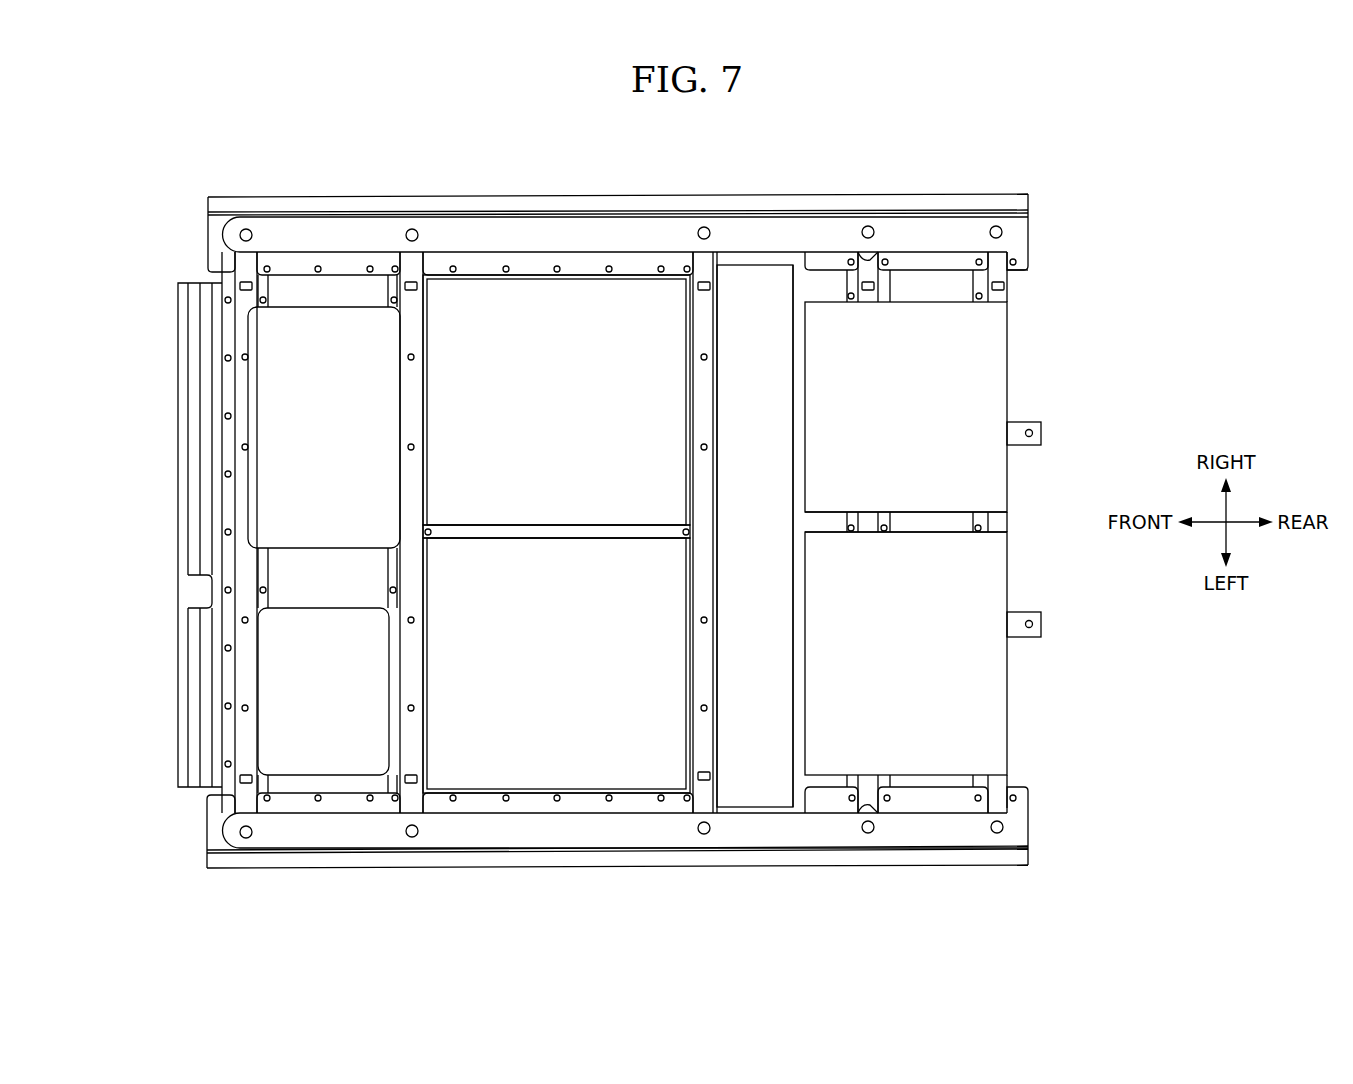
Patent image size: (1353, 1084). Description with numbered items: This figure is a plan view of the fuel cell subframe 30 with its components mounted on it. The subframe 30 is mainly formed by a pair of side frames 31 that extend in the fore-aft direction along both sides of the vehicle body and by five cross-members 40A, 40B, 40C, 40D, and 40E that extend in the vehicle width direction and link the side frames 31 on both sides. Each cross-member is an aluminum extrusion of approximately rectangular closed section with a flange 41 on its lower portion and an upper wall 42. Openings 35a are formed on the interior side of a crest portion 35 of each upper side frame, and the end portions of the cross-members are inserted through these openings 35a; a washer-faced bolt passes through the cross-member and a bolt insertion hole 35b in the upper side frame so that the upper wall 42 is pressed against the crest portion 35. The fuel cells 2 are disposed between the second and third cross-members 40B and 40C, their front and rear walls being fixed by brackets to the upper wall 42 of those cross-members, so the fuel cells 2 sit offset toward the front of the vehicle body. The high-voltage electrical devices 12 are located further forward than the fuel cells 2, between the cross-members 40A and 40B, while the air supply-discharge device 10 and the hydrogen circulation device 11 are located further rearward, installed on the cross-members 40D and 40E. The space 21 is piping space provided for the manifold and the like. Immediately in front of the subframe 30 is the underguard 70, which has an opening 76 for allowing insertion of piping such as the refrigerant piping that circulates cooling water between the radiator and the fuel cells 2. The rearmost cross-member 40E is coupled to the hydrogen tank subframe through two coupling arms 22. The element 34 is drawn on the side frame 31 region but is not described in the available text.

The fuel cell 2 is at (549, 411).
The air supply-discharge device 10 is at (891, 662).
The hydrogen circulation device 11 is at (891, 419).
The high-voltage electrical device 12 is at (308, 436).
The piping space 21 is at (741, 551).
The coupling arm 22 is at (1043, 432).
The fuel cell subframe 30 is at (763, 192).
The side frame 31 is at (578, 197).
The outer rail member 34 is at (510, 200).
The crest portion 35 is at (634, 228).
The opening 35a is at (855, 250).
The bolt insertion hole 35b is at (703, 227).
The cross-member 40A is at (247, 805).
The cross-member 40B is at (408, 805).
The cross-member 40C is at (707, 802).
The cross-member 40D is at (865, 802).
The cross-member 40E is at (993, 802).
The flange 41 is at (395, 570).
The upper wall 42 is at (705, 658).
The underguard 70 is at (178, 428).
The opening 76 is at (197, 600).